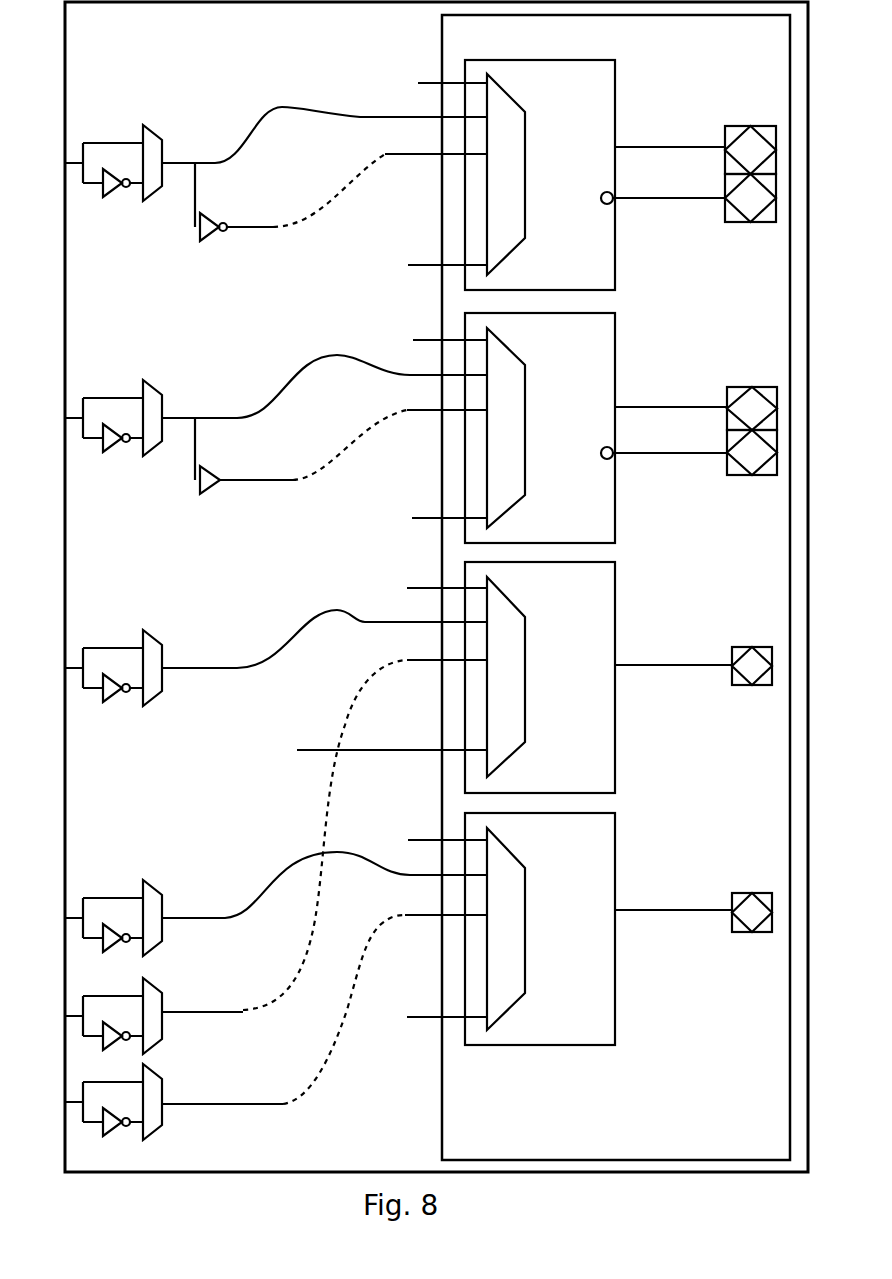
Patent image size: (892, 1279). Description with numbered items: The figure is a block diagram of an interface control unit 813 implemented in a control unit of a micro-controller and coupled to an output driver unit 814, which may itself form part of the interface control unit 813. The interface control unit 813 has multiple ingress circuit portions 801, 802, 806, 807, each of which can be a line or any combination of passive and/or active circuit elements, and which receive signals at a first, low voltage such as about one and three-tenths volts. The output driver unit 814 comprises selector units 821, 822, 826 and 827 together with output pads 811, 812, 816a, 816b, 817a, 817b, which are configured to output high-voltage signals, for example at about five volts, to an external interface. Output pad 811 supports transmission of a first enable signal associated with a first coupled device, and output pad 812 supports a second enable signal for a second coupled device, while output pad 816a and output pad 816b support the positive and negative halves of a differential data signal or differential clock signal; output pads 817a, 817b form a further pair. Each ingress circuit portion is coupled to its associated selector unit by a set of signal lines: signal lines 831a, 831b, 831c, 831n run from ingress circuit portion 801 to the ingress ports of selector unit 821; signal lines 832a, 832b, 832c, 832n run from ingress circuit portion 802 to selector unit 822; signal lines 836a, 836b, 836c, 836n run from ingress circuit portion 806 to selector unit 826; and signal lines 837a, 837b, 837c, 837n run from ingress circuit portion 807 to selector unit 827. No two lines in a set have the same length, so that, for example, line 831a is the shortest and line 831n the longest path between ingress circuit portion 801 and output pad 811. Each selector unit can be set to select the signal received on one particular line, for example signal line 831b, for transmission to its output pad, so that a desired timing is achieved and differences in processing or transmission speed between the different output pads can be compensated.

The interface control unit 813 is at (137, 44).
The output driver unit 814 is at (712, 64).
The ingress circuit portion 807 is at (127, 135).
The ingress circuit portion 806 is at (125, 388).
The ingress circuit portion 801 is at (148, 632).
The ingress circuit portion 802 is at (125, 892).
The selector unit 827 is at (585, 104).
The selector unit 826 is at (583, 361).
The selector unit 821 is at (587, 609).
The selector unit 822 is at (587, 861).
The output pad 817a is at (720, 145).
The output pad 817b is at (700, 206).
The output pad 816a is at (716, 397).
The output pad 816b is at (706, 458).
The output pad 811 is at (694, 657).
The output pad 812 is at (702, 906).
The signal line 837a is at (425, 78).
The signal line 837b is at (319, 120).
The signal line 837c is at (412, 165).
The signal line 837n is at (405, 259).
The signal line 836a is at (422, 336).
The signal line 836b is at (283, 398).
The signal line 836c is at (330, 455).
The signal line 836n is at (428, 508).
The signal line 831a is at (423, 584).
The signal line 831b is at (300, 642).
The signal line 831c is at (348, 696).
The signal line 831n is at (312, 756).
The signal line 832a is at (430, 838).
The signal line 832b is at (270, 884).
The signal line 832c is at (312, 1077).
The signal line 832n is at (416, 1030).